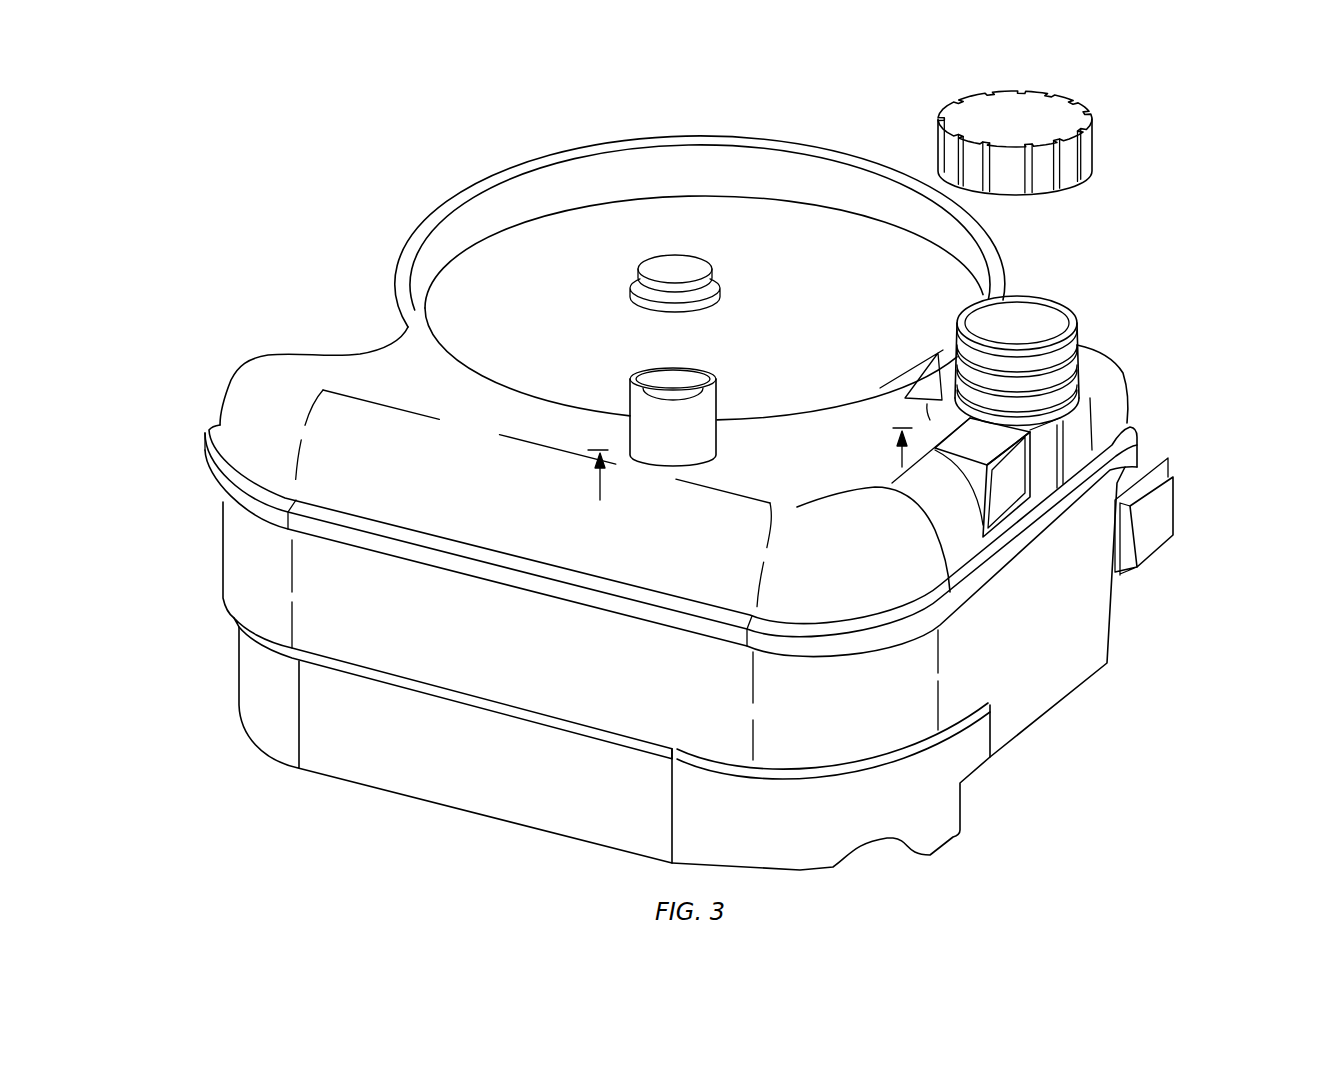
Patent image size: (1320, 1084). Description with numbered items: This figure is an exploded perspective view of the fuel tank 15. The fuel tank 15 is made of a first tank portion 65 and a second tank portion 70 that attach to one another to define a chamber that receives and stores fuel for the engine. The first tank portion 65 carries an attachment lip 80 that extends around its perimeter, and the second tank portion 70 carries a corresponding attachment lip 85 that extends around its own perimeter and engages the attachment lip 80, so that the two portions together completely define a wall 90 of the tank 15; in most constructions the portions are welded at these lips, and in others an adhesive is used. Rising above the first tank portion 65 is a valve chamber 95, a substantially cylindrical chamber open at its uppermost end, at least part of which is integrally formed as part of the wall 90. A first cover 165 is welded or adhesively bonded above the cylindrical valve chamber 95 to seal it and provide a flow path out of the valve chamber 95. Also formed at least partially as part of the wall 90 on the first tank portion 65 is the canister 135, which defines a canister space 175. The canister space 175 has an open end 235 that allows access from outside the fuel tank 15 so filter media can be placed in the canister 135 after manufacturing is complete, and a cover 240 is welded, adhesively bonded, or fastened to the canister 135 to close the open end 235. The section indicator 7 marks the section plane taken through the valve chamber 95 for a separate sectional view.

The fuel tank 15 is at (735, 480).
The first tank portion 65 is at (256, 382).
The second tank portion 70 is at (674, 668).
The attachment lip 80 is at (671, 541).
The attachment lip 85 is at (325, 535).
The wall 90 is at (505, 503).
The valve chamber 95 is at (702, 414).
The canister 135 is at (1007, 440).
The first cover 165 is at (695, 270).
The canister space 175 is at (1012, 502).
The open end 235 is at (987, 510).
The cover 240 is at (1162, 511).
The section line 7- 7 is at (737, 460).